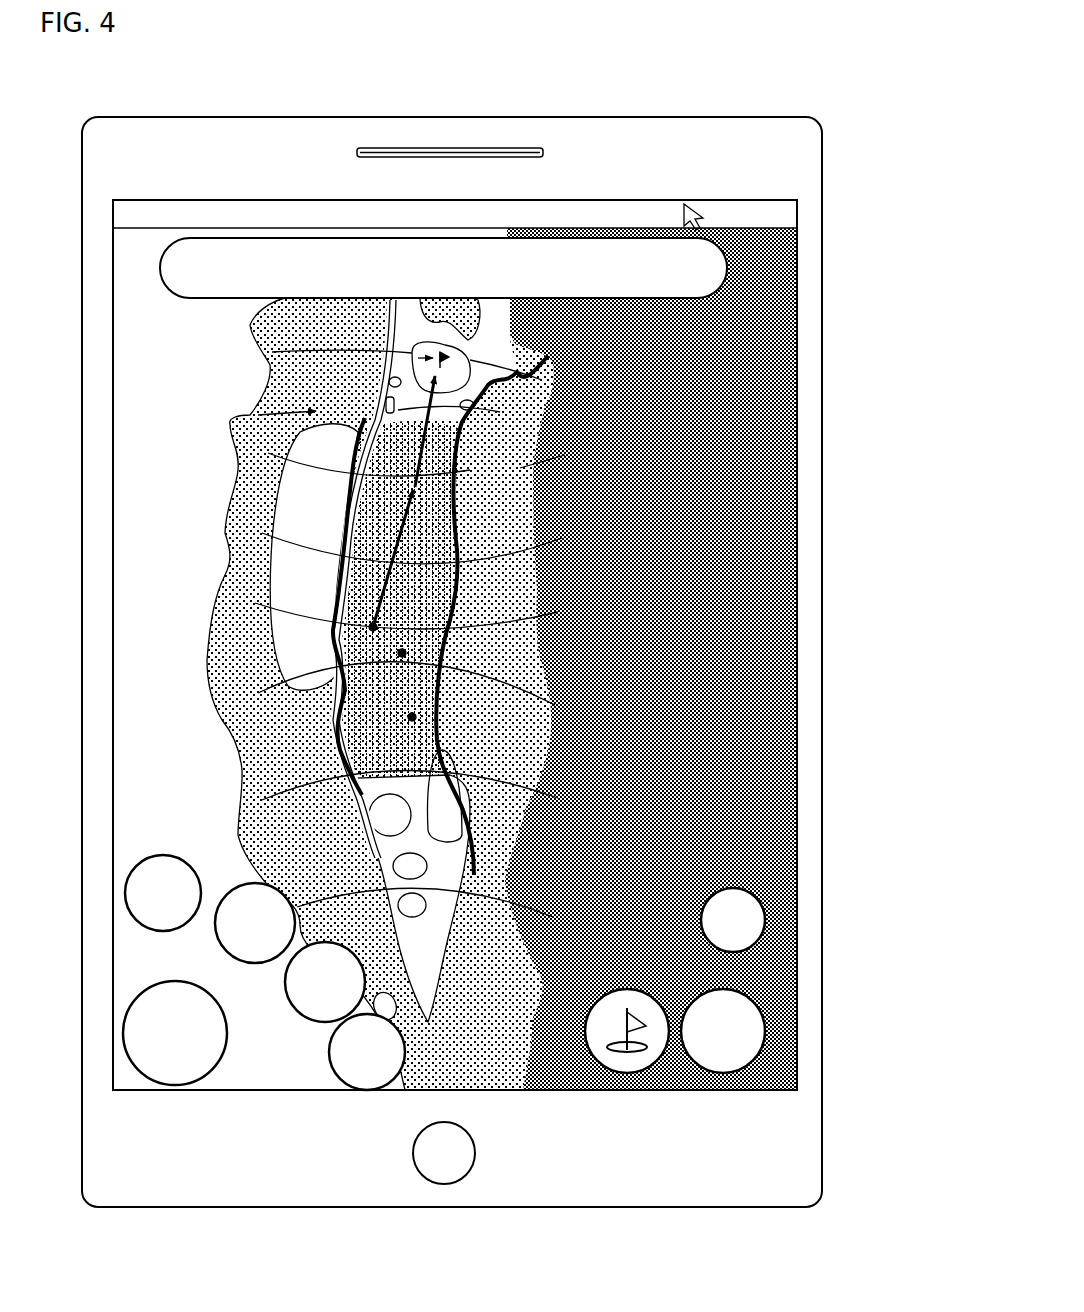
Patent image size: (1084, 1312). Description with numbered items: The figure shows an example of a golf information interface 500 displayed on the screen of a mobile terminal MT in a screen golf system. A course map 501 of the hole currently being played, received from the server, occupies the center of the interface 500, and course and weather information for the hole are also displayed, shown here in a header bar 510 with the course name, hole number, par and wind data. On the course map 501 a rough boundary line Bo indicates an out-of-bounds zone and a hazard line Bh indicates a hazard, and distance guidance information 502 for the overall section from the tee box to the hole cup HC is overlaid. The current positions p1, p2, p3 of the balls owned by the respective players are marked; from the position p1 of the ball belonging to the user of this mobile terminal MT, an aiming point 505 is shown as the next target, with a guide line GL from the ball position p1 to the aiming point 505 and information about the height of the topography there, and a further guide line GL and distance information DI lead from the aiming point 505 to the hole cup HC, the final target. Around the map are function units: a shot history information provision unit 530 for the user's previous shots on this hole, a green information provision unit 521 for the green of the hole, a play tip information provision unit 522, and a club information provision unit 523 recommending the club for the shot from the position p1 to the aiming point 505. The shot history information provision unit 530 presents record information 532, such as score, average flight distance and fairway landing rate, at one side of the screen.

The mobile terminal MT is at (822, 163).
The interface 500 is at (522, 690).
The course information bar 510 is at (793, 216).
The record information 532 is at (740, 266).
The course map 501 is at (310, 720).
The distance guidance information 502 is at (623, 611).
The aiming point 505 is at (530, 432).
The green information provision unit 521 is at (627, 1068).
The play tip information provision unit 522 is at (765, 1032).
The club information provision unit 523 is at (763, 921).
The shot history information provision unit 530 is at (224, 1070).
The hole cup HC is at (267, 383).
The distance information DI is at (238, 437).
The guide line GL is at (538, 386).
The hazard line Bh is at (346, 514).
The rough boundary line Bo is at (466, 525).
The current position of the ball p1 is at (370, 627).
The current position of the ball p2 is at (406, 652).
The current position of the ball p3 is at (418, 717).